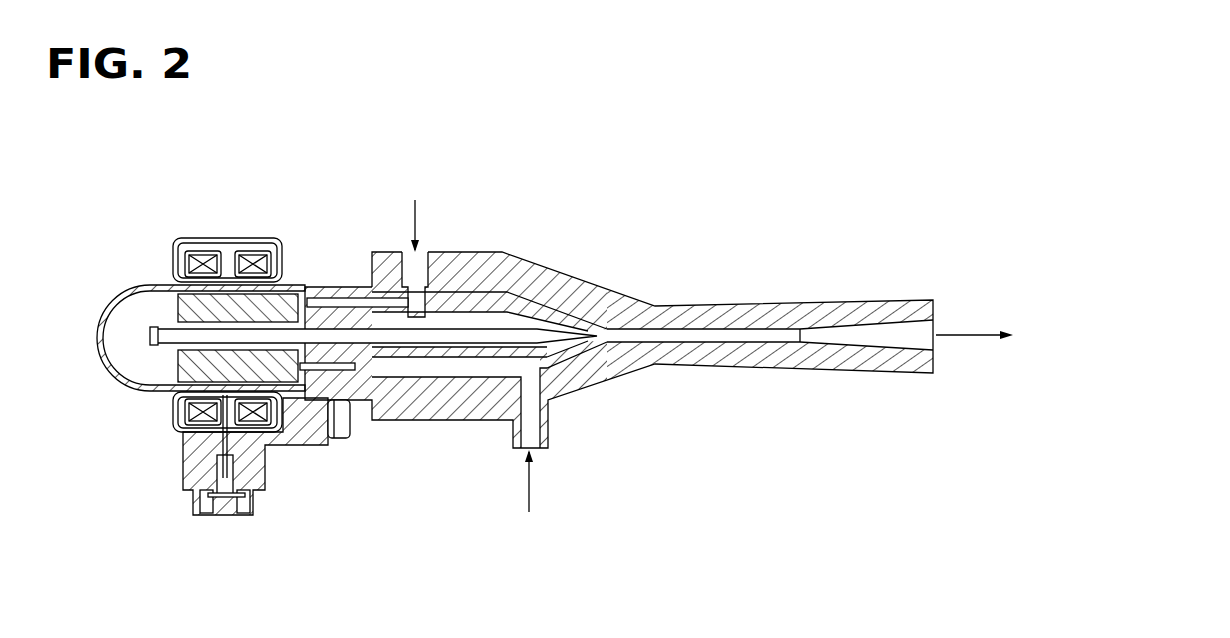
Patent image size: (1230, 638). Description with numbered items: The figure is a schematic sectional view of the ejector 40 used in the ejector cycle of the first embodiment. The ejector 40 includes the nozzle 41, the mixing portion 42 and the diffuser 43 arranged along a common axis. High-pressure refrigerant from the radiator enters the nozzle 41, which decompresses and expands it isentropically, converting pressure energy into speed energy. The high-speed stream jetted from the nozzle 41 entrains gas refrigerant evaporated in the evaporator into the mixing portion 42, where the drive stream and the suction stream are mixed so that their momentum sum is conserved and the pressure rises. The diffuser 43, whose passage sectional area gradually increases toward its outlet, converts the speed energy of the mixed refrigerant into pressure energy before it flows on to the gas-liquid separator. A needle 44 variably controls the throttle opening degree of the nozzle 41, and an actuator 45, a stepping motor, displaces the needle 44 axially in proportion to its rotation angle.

The ejector 40 is at (512, 252).
The nozzle 41 is at (590, 292).
The mixing portion 42 is at (706, 330).
The diffuser 43 is at (870, 335).
The needle 44 is at (428, 338).
The actuator 45 is at (203, 238).